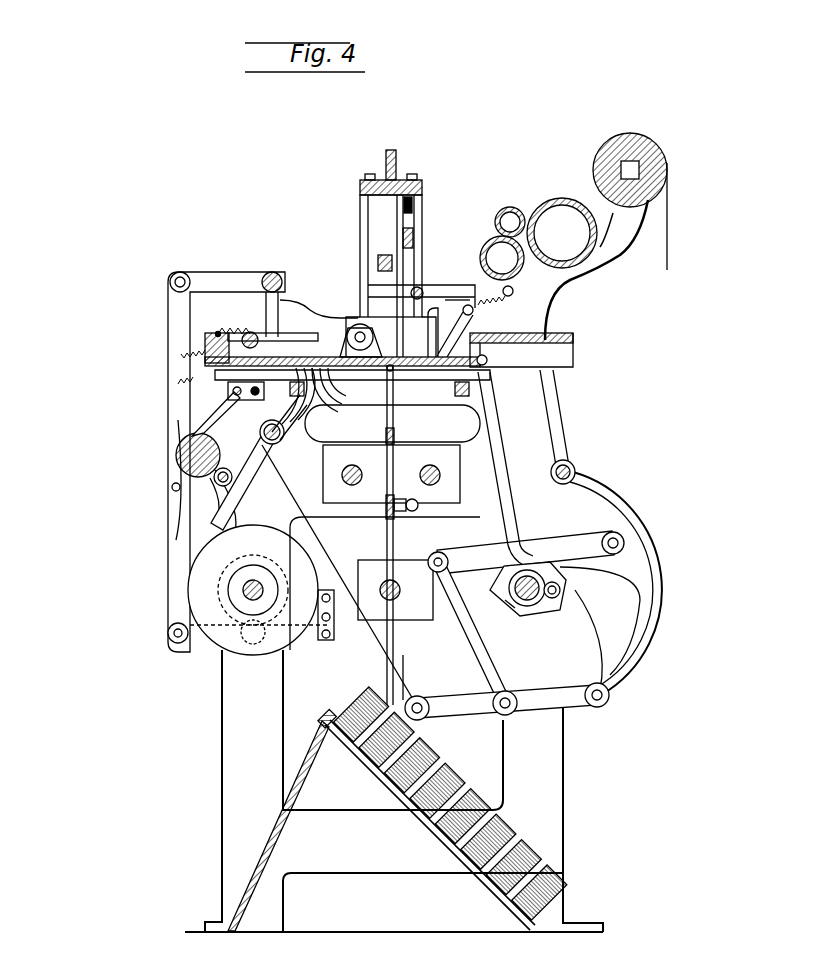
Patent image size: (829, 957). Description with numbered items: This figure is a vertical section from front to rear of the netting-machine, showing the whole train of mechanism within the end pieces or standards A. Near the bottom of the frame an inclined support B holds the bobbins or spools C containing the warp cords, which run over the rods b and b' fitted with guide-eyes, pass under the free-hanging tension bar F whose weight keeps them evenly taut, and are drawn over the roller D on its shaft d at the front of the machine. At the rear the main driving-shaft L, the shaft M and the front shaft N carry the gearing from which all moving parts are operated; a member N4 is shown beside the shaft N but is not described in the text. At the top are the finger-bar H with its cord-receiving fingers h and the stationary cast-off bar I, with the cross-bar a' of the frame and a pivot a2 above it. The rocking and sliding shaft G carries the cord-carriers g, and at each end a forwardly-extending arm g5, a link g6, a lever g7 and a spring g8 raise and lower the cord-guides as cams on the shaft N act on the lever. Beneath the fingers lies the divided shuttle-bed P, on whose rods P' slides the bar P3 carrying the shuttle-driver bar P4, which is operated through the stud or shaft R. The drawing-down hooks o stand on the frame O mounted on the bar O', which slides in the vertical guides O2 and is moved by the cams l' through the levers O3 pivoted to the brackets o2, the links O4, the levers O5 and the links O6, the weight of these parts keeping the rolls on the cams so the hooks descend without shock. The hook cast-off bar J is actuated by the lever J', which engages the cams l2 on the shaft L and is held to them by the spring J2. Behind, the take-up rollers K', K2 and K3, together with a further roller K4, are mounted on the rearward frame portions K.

The end pieces or standards A is at (394, 791).
The inclined support B is at (360, 846).
The bobbins or spools C is at (432, 762).
The roller D is at (176, 458).
The shaft of the roller d is at (214, 480).
The bar or rod F is at (190, 438).
The shaft G is at (339, 575).
The finger-bar H is at (402, 268).
The cast-off bar I is at (388, 272).
The hook cast-off bar J is at (482, 321).
The lever J' is at (505, 469).
The spring J2 is at (445, 300).
The frame extension K is at (606, 251).
The take-up roller K' is at (489, 256).
The take-up roller K2 is at (560, 198).
The take-up roller K3 is at (630, 149).
The small roller K4 is at (508, 208).
The main driving-shaft L is at (524, 612).
The cams l' is at (516, 583).
The cams l2 is at (512, 610).
The shaft M is at (395, 590).
The shaft N is at (246, 589).
The wheel bracket N4 is at (286, 583).
The frame O is at (392, 454).
The bar O' is at (385, 535).
The vertically-disposed guides O2 is at (356, 484).
The levers O3 is at (482, 556).
The links O4 is at (460, 600).
The levers O5 is at (532, 708).
The links O6 is at (412, 660).
The drawing-down hooks o is at (386, 370).
The brackets o2 is at (572, 528).
The shuttle-bed P is at (469, 401).
The rod P' is at (378, 364).
The bar P3 is at (678, 308).
The bar P4 is at (628, 352).
The stud or shaft R is at (293, 431).
The cross-bar a' is at (261, 331).
The pivot a2 is at (268, 274).
The rods or bars b is at (246, 408).
The rod or bar b' is at (182, 311).
The cord-carriers g is at (358, 326).
The forwardly-extending arm g5 is at (218, 276).
The link g6 is at (180, 385).
The lever g7 is at (190, 646).
The springs g8 is at (205, 352).
The cord-receiving fingers h is at (247, 468).